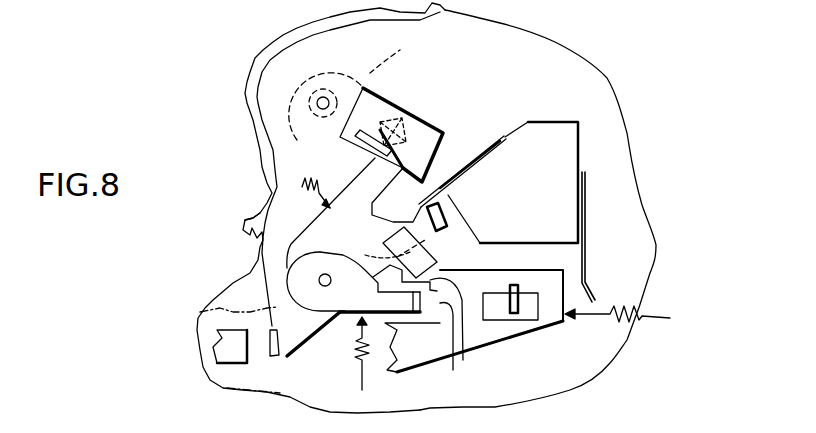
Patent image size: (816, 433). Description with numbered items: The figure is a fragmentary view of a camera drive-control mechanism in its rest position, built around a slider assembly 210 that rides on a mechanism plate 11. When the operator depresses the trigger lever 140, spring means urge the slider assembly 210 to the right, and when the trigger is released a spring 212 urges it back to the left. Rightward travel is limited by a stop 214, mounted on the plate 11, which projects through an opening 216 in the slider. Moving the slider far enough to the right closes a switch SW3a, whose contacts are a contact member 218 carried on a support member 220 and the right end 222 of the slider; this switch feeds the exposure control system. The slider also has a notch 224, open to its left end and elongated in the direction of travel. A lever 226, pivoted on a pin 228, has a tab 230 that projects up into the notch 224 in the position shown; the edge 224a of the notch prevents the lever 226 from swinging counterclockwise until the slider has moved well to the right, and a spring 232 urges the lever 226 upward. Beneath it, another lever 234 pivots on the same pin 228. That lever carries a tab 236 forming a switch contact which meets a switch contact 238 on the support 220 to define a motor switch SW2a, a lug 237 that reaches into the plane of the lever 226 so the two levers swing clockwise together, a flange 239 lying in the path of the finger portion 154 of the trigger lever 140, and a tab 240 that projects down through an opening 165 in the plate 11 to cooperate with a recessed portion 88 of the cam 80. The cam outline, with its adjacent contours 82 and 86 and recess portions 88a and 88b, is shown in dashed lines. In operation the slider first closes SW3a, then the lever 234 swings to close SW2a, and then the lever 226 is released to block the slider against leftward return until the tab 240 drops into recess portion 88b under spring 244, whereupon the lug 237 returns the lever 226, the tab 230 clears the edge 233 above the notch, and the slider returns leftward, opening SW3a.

The mechanism plate 11 is at (552, 52).
The cam 80 is at (293, 40).
The inner cover contour 82 is at (318, 105).
The cover edge break 86 is at (245, 226).
The recessed portion 88 is at (332, 61).
The dial cam portion 88a is at (400, 50).
The recess portion 88b is at (397, 87).
The trigger lever 140 is at (214, 349).
The finger portion 154 is at (225, 335).
The opening 165 is at (437, 133).
The slider assembly 210 is at (436, 353).
The spring 212 is at (620, 316).
The stop 214 is at (523, 300).
The opening 216 is at (497, 311).
The contact member 218 is at (590, 247).
The support member 220 is at (570, 162).
The right end 222 is at (573, 323).
The notch 224 is at (453, 367).
The edge 224a is at (458, 354).
The lever 226 is at (318, 280).
The pin 228 is at (303, 262).
The tab 230 is at (440, 303).
The spring 232 is at (357, 358).
The edge 233 is at (403, 273).
The lever 234 is at (354, 213).
The tab 236 is at (445, 222).
The lug 237 is at (370, 284).
The switch contact 238 is at (448, 194).
The flange 239 is at (200, 312).
The tab 240 is at (410, 125).
The spring 244 is at (302, 187).
The switch SW-2a SW2a is at (460, 185).
The switch SW-3a SW3a is at (592, 263).